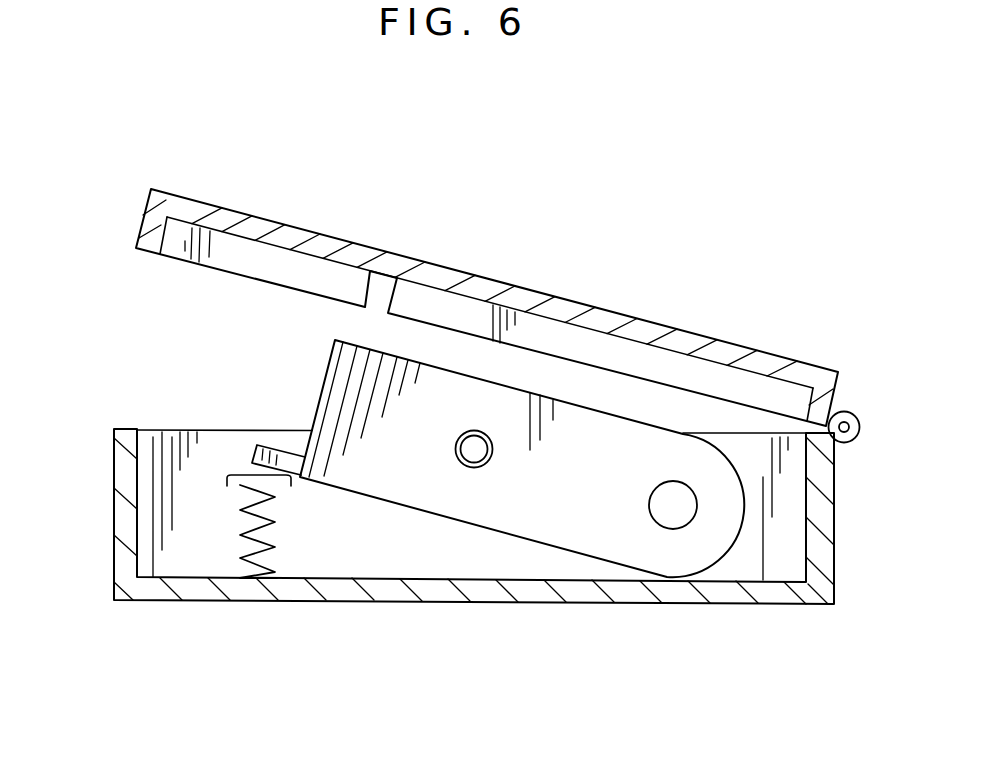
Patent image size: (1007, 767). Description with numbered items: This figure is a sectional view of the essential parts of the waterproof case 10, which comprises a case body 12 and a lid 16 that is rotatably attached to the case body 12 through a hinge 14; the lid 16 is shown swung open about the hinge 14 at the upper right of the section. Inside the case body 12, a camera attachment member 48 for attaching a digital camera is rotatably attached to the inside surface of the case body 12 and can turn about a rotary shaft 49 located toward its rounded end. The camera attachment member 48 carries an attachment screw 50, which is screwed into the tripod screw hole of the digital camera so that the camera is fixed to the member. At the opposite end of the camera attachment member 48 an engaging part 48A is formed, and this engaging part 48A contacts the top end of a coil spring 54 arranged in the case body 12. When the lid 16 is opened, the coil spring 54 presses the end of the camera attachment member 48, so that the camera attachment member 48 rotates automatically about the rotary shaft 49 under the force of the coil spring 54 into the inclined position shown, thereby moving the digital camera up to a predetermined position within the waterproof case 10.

The waterproof case 10 is at (693, 265).
The case body 12 is at (112, 515).
The hinge 14 is at (860, 423).
The lid 16 is at (276, 213).
The camera attachment member 48 is at (497, 540).
The engaging part 48A is at (253, 457).
The rotary shaft 49 is at (665, 505).
The attachment screw 50 is at (457, 462).
The coil spring 54 is at (243, 535).